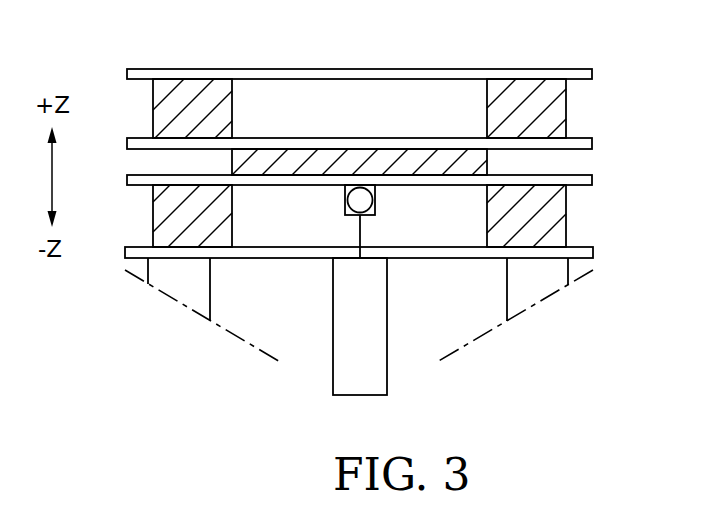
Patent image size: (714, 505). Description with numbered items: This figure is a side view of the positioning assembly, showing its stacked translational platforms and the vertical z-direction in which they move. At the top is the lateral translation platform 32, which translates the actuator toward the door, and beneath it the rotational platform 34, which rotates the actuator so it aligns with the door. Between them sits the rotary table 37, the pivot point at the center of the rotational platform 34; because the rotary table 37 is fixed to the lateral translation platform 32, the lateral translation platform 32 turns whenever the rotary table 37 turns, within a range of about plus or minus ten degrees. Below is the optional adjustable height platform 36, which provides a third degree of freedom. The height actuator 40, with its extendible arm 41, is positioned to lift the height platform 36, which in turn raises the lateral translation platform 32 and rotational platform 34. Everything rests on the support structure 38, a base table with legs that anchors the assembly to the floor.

The lateral translation platform 32 is at (568, 68).
The rotational platform 34 is at (580, 138).
The adjustable height platform 36 is at (592, 177).
The rotary table 37 is at (487, 172).
The support structure 38 is at (175, 292).
The height actuator 40 is at (387, 333).
The extendible arm 41 is at (362, 223).